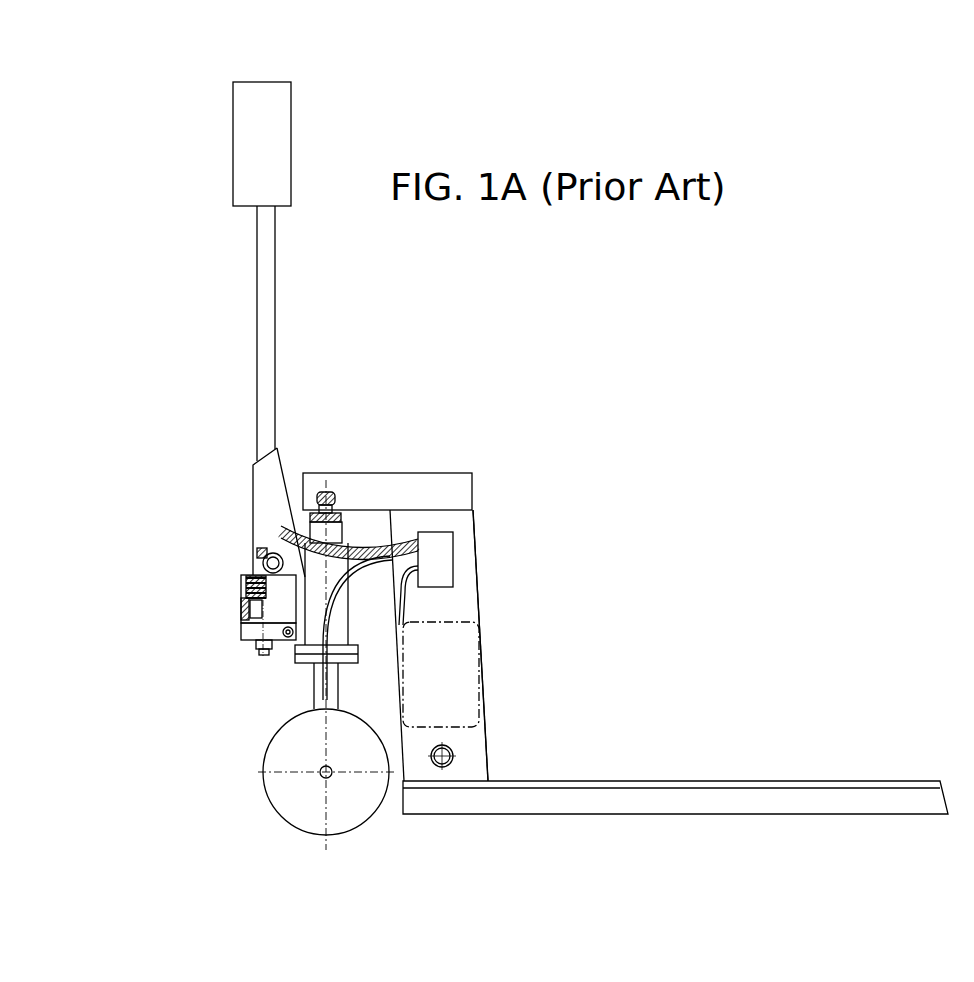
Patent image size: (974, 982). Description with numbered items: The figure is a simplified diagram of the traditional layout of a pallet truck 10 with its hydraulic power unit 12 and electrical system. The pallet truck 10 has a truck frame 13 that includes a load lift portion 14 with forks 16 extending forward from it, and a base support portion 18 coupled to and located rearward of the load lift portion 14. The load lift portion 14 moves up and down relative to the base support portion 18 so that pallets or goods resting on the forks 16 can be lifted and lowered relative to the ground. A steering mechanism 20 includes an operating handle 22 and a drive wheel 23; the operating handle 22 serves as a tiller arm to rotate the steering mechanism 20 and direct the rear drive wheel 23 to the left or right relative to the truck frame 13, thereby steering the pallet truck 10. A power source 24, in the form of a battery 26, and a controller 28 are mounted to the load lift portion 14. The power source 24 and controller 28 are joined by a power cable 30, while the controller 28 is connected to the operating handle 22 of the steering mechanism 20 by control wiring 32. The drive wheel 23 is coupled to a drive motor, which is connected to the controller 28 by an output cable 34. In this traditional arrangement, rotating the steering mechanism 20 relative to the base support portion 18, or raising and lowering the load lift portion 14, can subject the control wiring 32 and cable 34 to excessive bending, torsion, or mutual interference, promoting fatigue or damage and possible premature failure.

The pallet truck 10 is at (577, 342).
The hydraulic power unit 12 is at (238, 627).
The truck frame 13 is at (362, 466).
The load lift portion 14 is at (437, 471).
The forks 16 is at (746, 780).
The base support portion 18 is at (289, 648).
The steering mechanism 20 is at (252, 485).
The operating handle 22 is at (260, 249).
The drive wheel 23 is at (288, 797).
The power source 24 is at (490, 698).
The battery 26 is at (467, 658).
The controller 28 is at (445, 555).
The power cable 30 is at (404, 602).
The control wiring 32 is at (256, 527).
The cable 34 is at (310, 693).